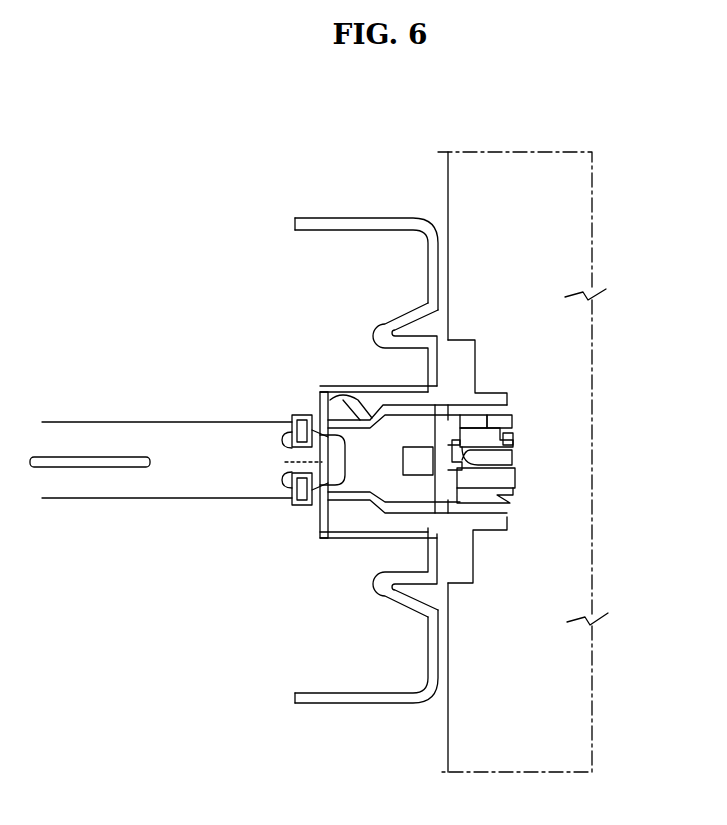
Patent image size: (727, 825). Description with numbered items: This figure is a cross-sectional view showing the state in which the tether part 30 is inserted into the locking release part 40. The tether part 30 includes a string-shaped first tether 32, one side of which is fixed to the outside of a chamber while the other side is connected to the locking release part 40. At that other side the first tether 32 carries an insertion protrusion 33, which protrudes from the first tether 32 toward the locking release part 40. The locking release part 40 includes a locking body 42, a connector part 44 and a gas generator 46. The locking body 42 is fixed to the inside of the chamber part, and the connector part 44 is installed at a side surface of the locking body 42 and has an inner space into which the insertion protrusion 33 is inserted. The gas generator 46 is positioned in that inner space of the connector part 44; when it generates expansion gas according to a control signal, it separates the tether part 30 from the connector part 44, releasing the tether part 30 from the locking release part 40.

The tether part 30 is at (83, 411).
The first tether 32 is at (152, 422).
The insertion protrusion 33 is at (273, 458).
The locking release part 40 is at (417, 176).
The locking body 42 is at (573, 216).
The connector part 44 is at (328, 545).
The gas generator 46 is at (418, 458).